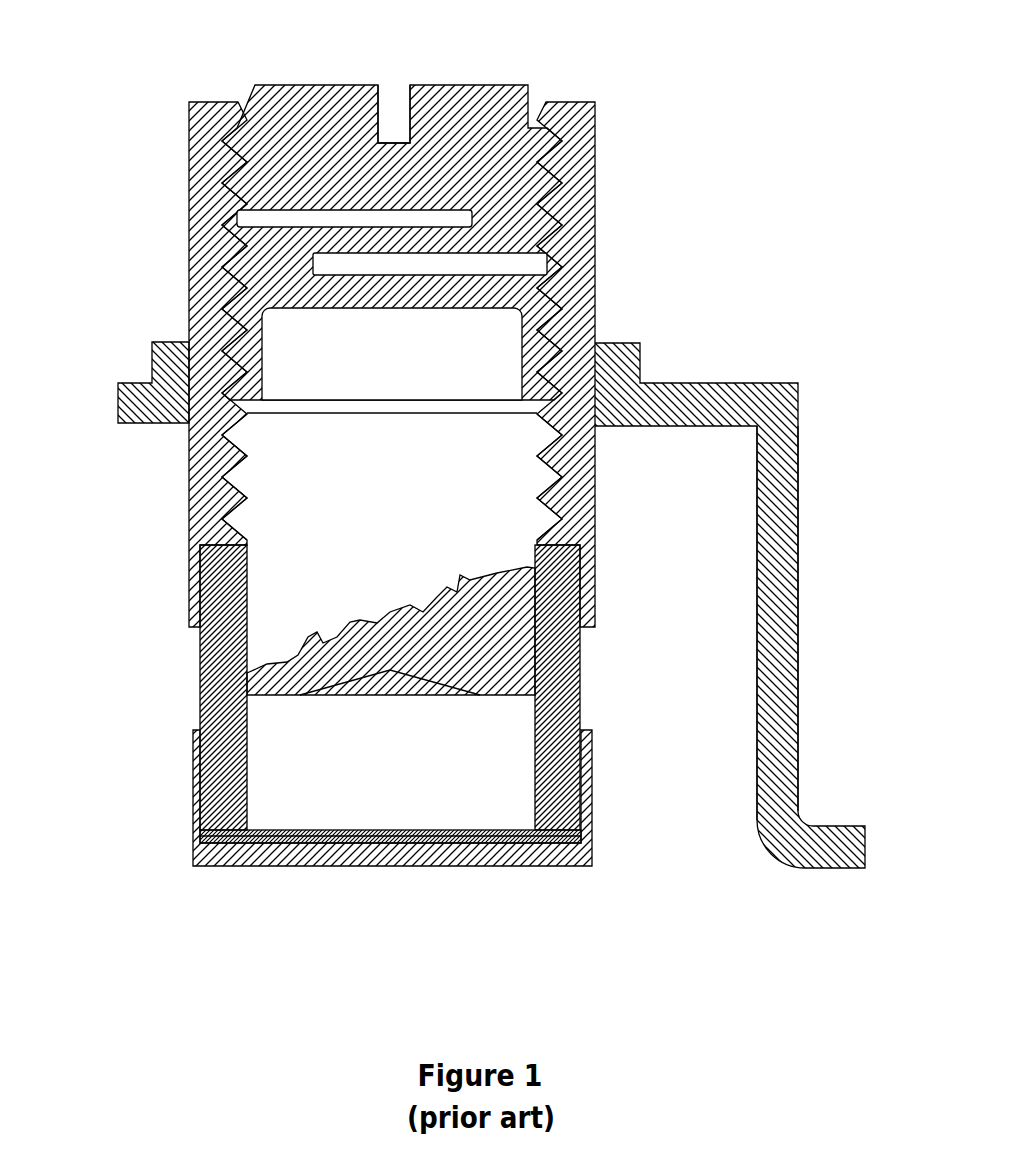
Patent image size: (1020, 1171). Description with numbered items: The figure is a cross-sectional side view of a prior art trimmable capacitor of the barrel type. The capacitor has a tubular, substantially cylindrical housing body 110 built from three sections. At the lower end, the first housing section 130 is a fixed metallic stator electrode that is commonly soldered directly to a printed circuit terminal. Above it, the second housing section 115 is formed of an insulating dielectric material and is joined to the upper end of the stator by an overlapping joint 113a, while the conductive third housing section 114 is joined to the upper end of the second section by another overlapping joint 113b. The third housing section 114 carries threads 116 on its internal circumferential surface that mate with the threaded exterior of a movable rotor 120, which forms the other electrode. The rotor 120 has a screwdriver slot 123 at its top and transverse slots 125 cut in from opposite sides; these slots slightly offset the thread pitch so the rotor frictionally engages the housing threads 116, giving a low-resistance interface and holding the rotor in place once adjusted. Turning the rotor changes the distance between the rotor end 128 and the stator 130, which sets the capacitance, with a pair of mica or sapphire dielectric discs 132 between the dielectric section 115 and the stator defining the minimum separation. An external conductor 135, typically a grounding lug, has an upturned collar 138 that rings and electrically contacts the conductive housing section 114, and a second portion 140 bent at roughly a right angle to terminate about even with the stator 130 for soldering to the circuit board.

The housing body 110 is at (477, 471).
The third housing section 114 is at (217, 162).
The second housing section 115 is at (368, 687).
The threads 116 is at (230, 471).
The rotor 120 is at (470, 100).
The screwdriver slot 123 is at (397, 93).
The transverse slots 125 is at (373, 268).
The rotor end 128 is at (293, 697).
The first housing section 130 is at (513, 867).
The dielectric discs 132 is at (340, 828).
The external conductor 135 is at (820, 557).
The upturned collar 138 is at (640, 357).
The second portion 140 is at (775, 525).
The overlapping joint 113a is at (583, 720).
The overlapping joint 113b is at (583, 640).